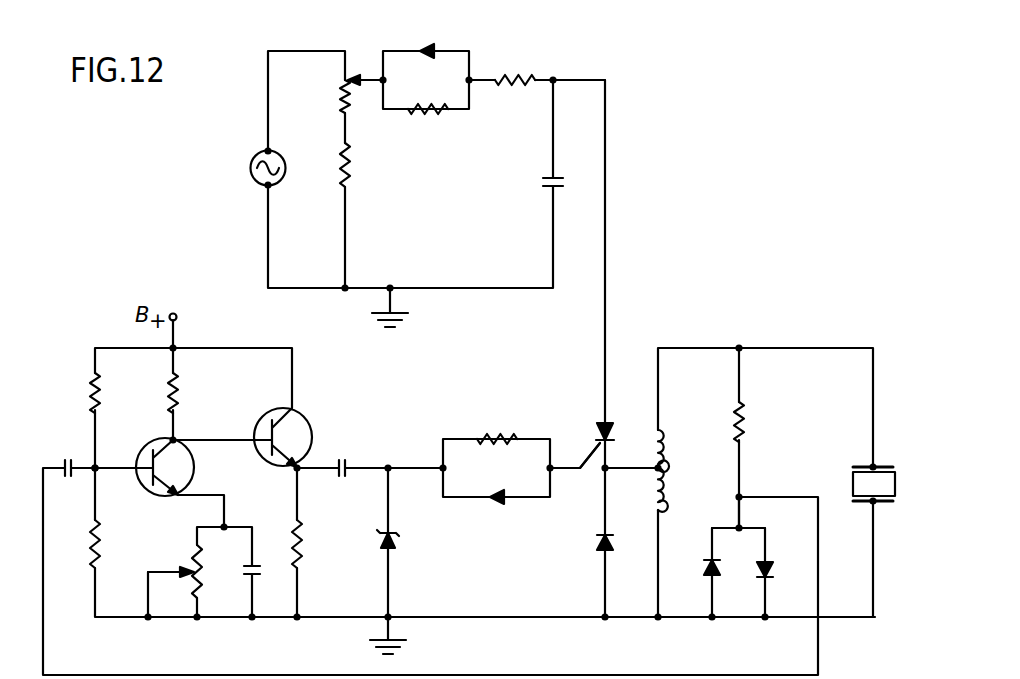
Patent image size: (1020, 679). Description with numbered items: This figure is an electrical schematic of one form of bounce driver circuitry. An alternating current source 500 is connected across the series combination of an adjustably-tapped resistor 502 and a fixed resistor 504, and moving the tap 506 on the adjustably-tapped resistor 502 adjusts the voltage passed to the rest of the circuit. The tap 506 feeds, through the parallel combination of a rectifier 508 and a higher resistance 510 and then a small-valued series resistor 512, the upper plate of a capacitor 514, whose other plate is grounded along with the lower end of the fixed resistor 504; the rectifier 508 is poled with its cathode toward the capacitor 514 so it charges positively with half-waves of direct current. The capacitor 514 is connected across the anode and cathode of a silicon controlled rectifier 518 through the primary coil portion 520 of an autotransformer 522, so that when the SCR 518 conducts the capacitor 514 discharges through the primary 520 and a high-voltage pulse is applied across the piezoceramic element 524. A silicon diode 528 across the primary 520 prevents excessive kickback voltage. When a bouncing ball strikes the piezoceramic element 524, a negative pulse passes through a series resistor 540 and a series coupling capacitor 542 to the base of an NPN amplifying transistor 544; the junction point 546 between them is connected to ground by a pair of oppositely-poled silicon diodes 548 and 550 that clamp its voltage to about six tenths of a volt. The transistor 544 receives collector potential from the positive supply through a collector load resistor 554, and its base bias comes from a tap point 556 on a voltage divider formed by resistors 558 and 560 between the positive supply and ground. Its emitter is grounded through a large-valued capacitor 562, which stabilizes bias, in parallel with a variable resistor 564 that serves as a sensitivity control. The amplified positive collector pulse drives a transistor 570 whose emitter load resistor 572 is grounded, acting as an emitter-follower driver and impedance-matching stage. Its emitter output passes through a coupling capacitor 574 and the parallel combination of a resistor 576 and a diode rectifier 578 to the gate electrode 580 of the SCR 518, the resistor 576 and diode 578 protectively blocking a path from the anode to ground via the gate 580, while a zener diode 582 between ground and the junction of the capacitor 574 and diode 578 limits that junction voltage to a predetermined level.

The alternating current source 500 is at (250, 165).
The adjustably-tapped resistor 502 is at (343, 86).
The fixed resistor 504 is at (340, 178).
The tap 506 is at (357, 75).
The rectifier 508 is at (431, 50).
The higher resistance 510 is at (425, 111).
The small-valued series resistor 512 is at (512, 75).
The capacitor 514 is at (543, 182).
The silicon controlled rectifier 518 is at (602, 423).
The primary coil portion 520 is at (652, 490).
The autotransformer 522 is at (655, 432).
The piezoceramic element 524 is at (896, 470).
The silicon diode 528 is at (597, 546).
The series resistor 540 is at (745, 420).
The series coupling capacitor 542 is at (67, 458).
The amplifying transistor 544 is at (143, 455).
The junction point 546 is at (737, 527).
The silicon diode 548 is at (710, 560).
The silicon diode 550 is at (768, 565).
The collector load resistor 554 is at (180, 390).
The tap point 556 is at (93, 470).
The resistor 558 is at (90, 386).
The resistor 560 is at (102, 548).
The large-valued capacitor 562 is at (254, 558).
The variable resistor 564 is at (203, 588).
The transistor 570 is at (312, 419).
The emitter load resistor 572 is at (302, 545).
The coupling capacitor 574 is at (345, 462).
The resistor 576 is at (494, 432).
The diode rectifier 578 is at (496, 504).
The gate electrode 580 is at (591, 470).
The zener diode 582 is at (391, 540).